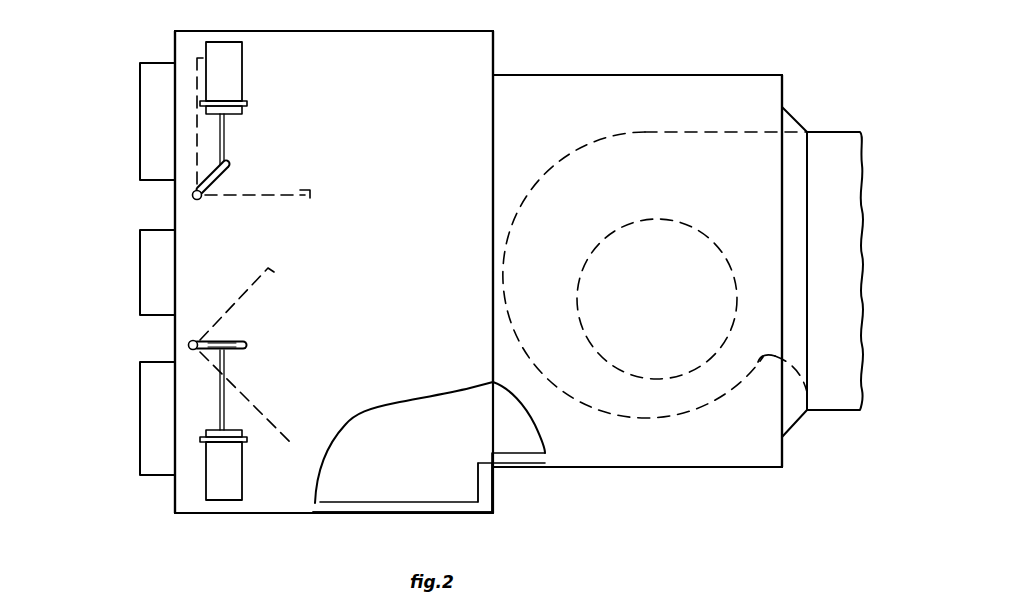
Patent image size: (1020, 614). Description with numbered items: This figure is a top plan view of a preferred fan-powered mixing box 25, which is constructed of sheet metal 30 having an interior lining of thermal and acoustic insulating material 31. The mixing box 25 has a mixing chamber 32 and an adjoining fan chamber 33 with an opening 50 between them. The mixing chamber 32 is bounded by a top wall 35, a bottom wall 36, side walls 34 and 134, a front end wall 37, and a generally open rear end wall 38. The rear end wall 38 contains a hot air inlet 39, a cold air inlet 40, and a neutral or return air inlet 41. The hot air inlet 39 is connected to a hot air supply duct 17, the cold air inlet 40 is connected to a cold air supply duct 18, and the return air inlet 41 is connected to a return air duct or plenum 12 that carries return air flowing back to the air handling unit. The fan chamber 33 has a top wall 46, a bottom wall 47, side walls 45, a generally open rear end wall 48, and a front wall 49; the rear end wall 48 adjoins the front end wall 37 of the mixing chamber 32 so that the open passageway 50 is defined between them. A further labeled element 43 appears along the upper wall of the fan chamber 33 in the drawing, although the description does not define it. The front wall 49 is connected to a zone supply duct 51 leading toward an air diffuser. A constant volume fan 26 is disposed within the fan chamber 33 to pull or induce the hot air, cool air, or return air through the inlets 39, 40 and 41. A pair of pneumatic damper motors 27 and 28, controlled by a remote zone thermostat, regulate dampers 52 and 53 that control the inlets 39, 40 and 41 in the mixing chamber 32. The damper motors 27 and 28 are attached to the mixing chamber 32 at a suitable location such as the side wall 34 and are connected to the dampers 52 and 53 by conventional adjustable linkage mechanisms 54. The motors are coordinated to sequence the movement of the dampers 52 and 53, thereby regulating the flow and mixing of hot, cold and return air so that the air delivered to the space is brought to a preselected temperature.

The return air duct or plenum 12 is at (140, 257).
The hot air supply duct 17 is at (140, 160).
The cold air supply duct 18 is at (140, 395).
The fan-powered mixing box 25 is at (583, 72).
The constant volume fan 26 is at (643, 420).
The pneumatic damper motor 27 is at (235, 70).
The pneumatic damper motor 28 is at (232, 470).
The sheet metal 30 is at (360, 518).
The thermal and acoustic insulating material 31 is at (343, 503).
The mixing chamber 32 is at (399, 146).
The fan chamber 33 is at (519, 146).
The side wall 34 is at (475, 44).
The side wall 134 is at (470, 65).
The top wall 35 is at (190, 32).
The bottom wall 36 is at (248, 515).
The front end wall 37 is at (478, 487).
The rear end wall 38 is at (175, 496).
The hot air inlet 39 is at (175, 135).
The cold air inlet 40 is at (175, 440).
The return air inlet 41 is at (175, 298).
The blower top 43 is at (688, 80).
The side walls 45 is at (615, 80).
The top wall 46 is at (752, 75).
The bottom wall 47 is at (716, 468).
The rear end wall 48 is at (495, 503).
The front wall 49 is at (783, 452).
The opening 50 is at (449, 430).
The zone supply duct 51 is at (832, 132).
The damper 52 is at (283, 190).
The damper 53 is at (270, 290).
The adjustable linkage mechanism 54 is at (228, 165).